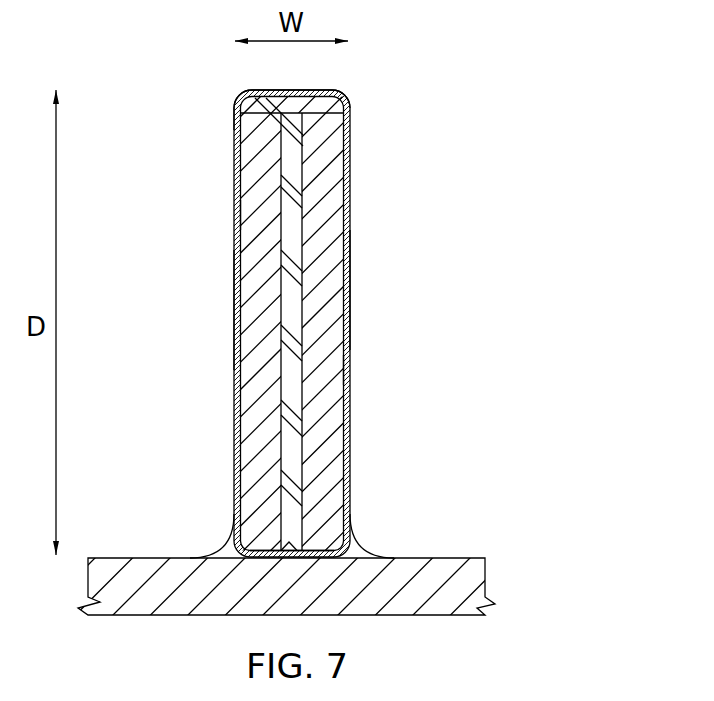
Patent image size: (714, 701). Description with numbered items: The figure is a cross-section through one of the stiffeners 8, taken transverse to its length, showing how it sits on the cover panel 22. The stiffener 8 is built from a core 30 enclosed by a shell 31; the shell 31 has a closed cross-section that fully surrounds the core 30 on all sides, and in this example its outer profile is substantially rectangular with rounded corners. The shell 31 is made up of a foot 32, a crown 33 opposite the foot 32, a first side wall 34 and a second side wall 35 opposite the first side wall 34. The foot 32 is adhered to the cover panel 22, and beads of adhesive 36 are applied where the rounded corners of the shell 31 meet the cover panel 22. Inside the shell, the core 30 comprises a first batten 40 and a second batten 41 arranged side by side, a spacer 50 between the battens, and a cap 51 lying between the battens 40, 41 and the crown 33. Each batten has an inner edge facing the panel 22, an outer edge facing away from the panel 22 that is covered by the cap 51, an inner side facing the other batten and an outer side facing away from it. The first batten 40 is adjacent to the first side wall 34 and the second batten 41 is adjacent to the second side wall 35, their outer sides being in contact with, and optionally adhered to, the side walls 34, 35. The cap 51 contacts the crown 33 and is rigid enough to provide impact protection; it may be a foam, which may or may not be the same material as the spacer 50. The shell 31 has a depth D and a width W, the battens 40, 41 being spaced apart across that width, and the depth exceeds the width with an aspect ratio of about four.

The stiffener 8 is at (400, 227).
The cover panel 22 is at (487, 572).
The core 30 is at (357, 350).
The shell 31 is at (236, 100).
The foot 32 is at (257, 551).
The crown 33 is at (248, 126).
The first side wall 34 is at (236, 310).
The second side wall 35 is at (350, 292).
The beads of adhesive 36 is at (207, 552).
The first batten 40 is at (248, 215).
The second batten 41 is at (330, 370).
The spacer 50 is at (345, 135).
The cap 51 is at (320, 102).